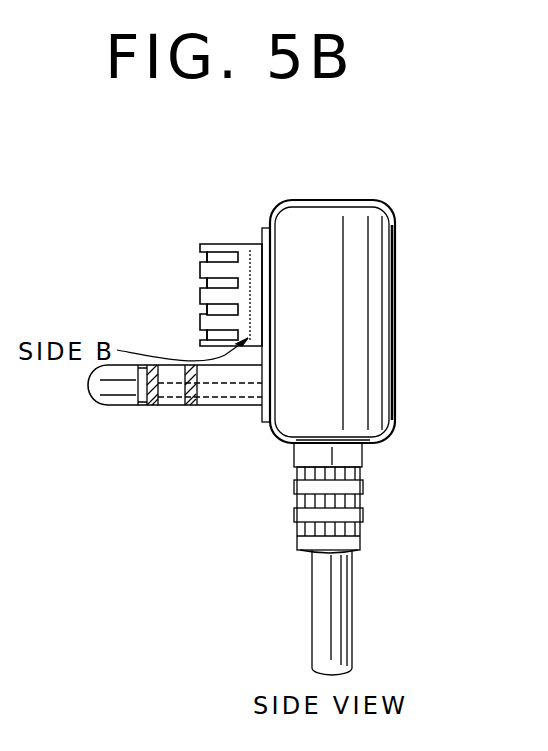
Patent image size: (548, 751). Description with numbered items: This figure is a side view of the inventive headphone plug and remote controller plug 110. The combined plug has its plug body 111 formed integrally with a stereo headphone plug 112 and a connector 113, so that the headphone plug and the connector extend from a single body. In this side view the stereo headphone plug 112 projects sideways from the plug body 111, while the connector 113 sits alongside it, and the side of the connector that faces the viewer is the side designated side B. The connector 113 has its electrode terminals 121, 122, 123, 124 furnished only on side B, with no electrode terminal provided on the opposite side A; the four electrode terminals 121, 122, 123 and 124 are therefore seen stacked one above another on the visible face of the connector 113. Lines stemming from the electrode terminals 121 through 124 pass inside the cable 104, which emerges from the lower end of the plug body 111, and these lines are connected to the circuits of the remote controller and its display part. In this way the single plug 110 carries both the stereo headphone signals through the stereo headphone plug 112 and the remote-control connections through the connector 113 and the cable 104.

The cable 104 is at (312, 600).
The headphone plug and remote controller plug 110 is at (347, 198).
The plug body 111 is at (273, 210).
The stereo headphone plug 112 is at (232, 406).
The connector 113 is at (228, 243).
The electrode terminal 121 is at (205, 258).
The electrode terminal 122 is at (205, 284).
The electrode terminal 123 is at (205, 310).
The electrode terminal 124 is at (205, 336).